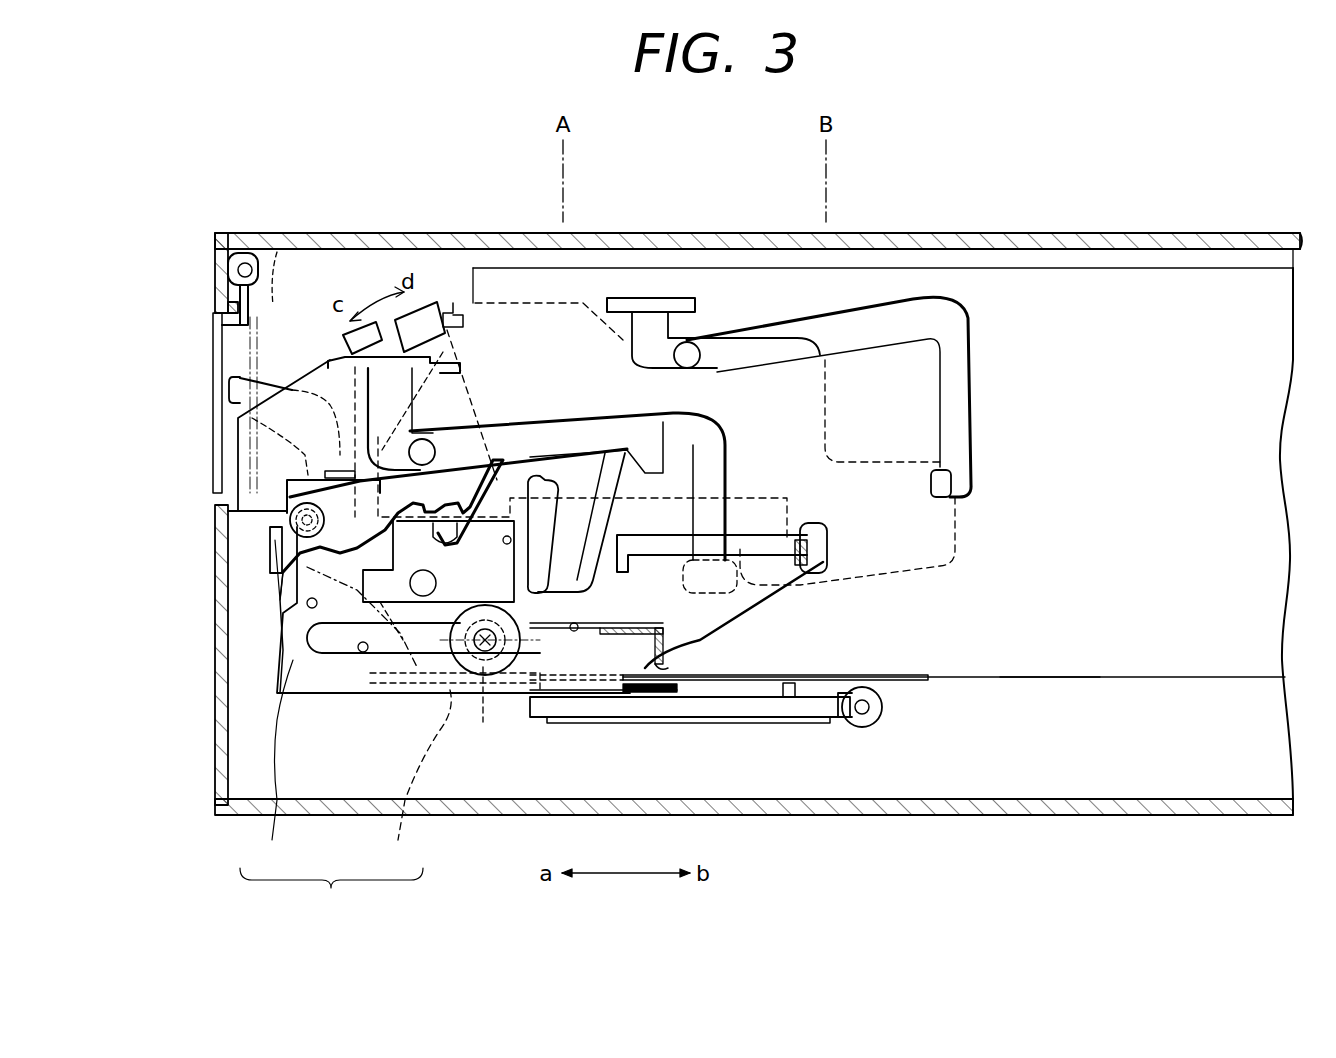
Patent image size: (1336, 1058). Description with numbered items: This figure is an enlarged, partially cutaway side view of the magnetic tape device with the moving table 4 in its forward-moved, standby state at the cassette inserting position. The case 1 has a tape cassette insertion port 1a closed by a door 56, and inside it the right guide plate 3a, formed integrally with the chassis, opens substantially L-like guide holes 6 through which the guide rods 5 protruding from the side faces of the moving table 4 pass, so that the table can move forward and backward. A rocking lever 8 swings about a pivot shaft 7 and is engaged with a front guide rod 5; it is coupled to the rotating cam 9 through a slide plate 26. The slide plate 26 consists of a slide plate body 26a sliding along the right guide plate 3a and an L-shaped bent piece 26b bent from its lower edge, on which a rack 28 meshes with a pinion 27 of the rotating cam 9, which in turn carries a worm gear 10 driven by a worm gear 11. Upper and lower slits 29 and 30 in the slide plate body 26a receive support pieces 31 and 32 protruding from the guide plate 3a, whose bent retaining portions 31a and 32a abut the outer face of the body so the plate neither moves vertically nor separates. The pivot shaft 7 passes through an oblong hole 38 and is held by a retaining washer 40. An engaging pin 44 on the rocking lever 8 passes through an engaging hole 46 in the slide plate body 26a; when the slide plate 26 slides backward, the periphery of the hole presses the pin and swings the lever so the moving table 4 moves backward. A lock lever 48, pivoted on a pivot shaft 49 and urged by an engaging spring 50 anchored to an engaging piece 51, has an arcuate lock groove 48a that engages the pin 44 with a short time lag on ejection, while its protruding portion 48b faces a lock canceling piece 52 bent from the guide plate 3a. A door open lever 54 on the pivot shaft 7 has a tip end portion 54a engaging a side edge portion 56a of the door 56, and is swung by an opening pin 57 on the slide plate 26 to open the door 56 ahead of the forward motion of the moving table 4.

The case 1 is at (1200, 233).
The tape cassette insertion port 1a is at (213, 306).
The right guide plate 3a is at (1093, 650).
The moving table 4 is at (525, 302).
The guide rods 5 is at (690, 348).
The guide holes 6 is at (862, 323).
The pivot shaft 7 is at (484, 709).
The rocking lever 8 is at (342, 338).
The rotating cam 9 is at (800, 732).
The worm gear 10 is at (862, 728).
The worm gear 11 is at (884, 705).
The slide plate 26 is at (331, 890).
The slide plate body 26a is at (269, 765).
The bent piece 26b is at (413, 780).
The pinion 27 is at (750, 690).
The rack 28 is at (675, 692).
The upper slit 29 is at (730, 550).
The lower slit 30 is at (578, 625).
The support piece 31 is at (815, 527).
The retaining portion 31a is at (812, 568).
The support piece 32 is at (641, 626).
The retaining portion 32a is at (663, 667).
The oblong hole 38 is at (365, 650).
The retaining washer 40 is at (512, 643).
The engaging pin 44 is at (432, 580).
The engaging hole 46 is at (511, 541).
The lock lever 48 is at (470, 457).
The lock groove 48a is at (498, 505).
The protruding portion 48b is at (280, 590).
The pivot shaft 49 is at (222, 511).
The engaging spring 50 is at (312, 478).
The engaging piece 51 is at (333, 470).
The lock canceling piece 52 is at (272, 545).
The door open lever 54 is at (268, 403).
The tip end portion 54a is at (230, 389).
The door 56 is at (212, 352).
The side edge portion 56a is at (277, 252).
The opening pin 57 is at (282, 643).